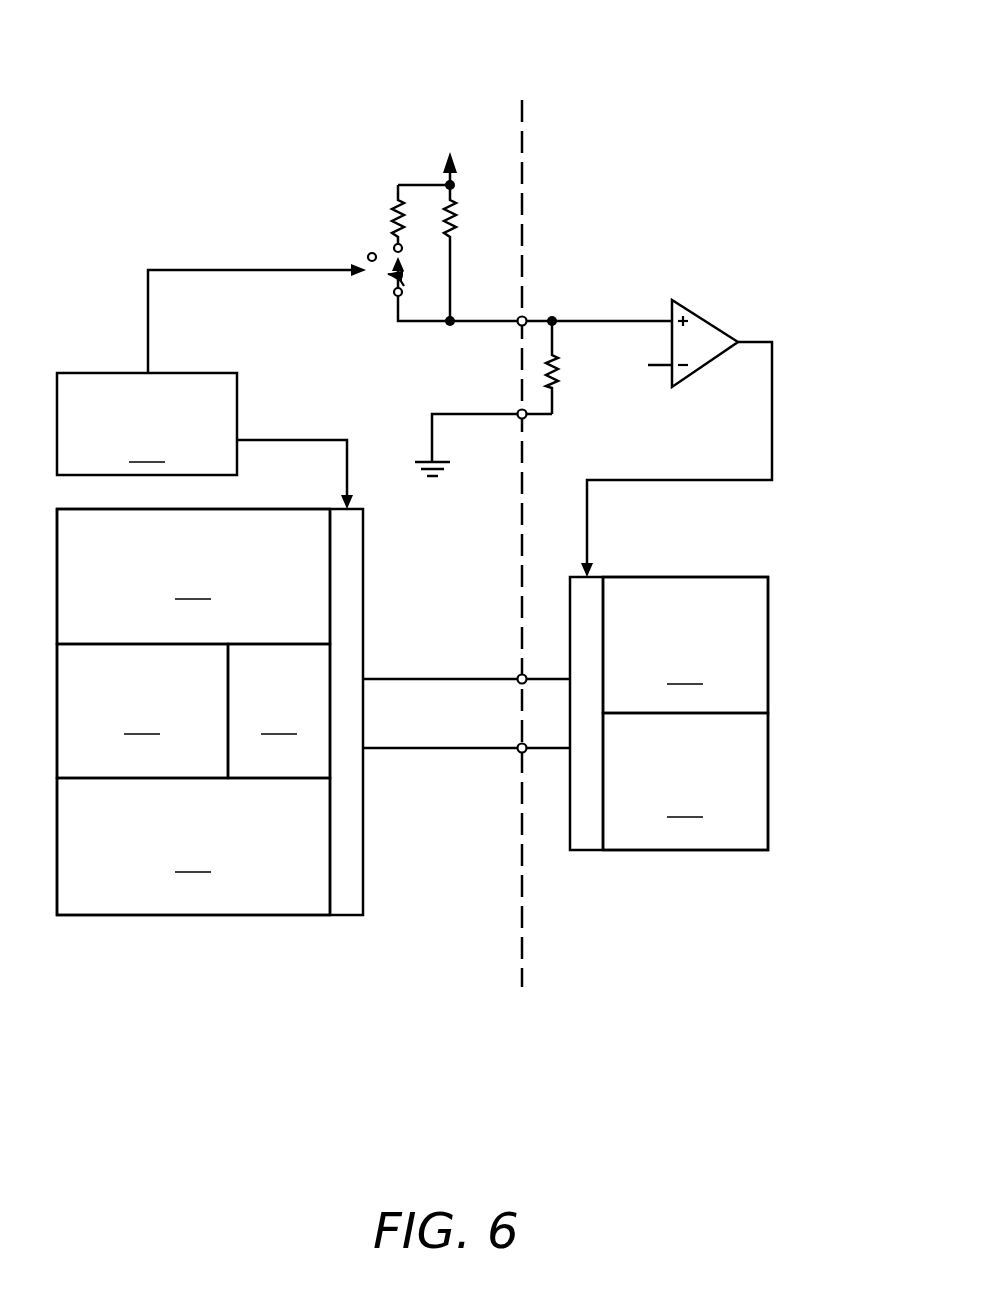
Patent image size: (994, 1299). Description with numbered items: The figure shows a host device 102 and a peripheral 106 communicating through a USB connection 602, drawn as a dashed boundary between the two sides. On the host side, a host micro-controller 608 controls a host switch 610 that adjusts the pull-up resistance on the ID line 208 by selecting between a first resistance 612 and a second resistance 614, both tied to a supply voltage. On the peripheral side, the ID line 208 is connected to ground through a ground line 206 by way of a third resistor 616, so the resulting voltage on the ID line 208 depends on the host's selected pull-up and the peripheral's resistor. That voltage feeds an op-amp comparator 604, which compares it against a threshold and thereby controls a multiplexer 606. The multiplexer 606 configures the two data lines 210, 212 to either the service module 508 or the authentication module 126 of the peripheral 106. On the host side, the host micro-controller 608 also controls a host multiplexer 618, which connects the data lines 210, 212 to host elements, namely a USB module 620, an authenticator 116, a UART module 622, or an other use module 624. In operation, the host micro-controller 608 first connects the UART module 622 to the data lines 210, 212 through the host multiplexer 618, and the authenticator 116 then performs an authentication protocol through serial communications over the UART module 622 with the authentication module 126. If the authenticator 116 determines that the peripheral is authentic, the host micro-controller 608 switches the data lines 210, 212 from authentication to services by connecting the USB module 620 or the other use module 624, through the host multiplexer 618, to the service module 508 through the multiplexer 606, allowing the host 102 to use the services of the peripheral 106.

The host device 102 is at (116, 184).
The peripheral 106 is at (758, 190).
The authenticator 116 is at (142, 711).
The authentication module 126 is at (685, 781).
The ground line 206 is at (480, 398).
The ID line 208 is at (480, 341).
The data line 210 is at (440, 693).
The data line 212 is at (440, 763).
The service module 508 is at (685, 645).
The USB connection 602 is at (502, 84).
The op-amp comparator 604 is at (707, 315).
The multiplexer 606 is at (587, 830).
The host micro-controller 608 is at (211, 386).
The host switch 610 is at (360, 303).
The first resistance R1 612 is at (481, 190).
The second resistance R2 614 is at (365, 188).
The resistor R3 616 is at (583, 403).
The host multiplexer 618 is at (352, 578).
The USB module 620 is at (193, 576).
The UART module 622 is at (279, 711).
The other use module 624 is at (193, 846).